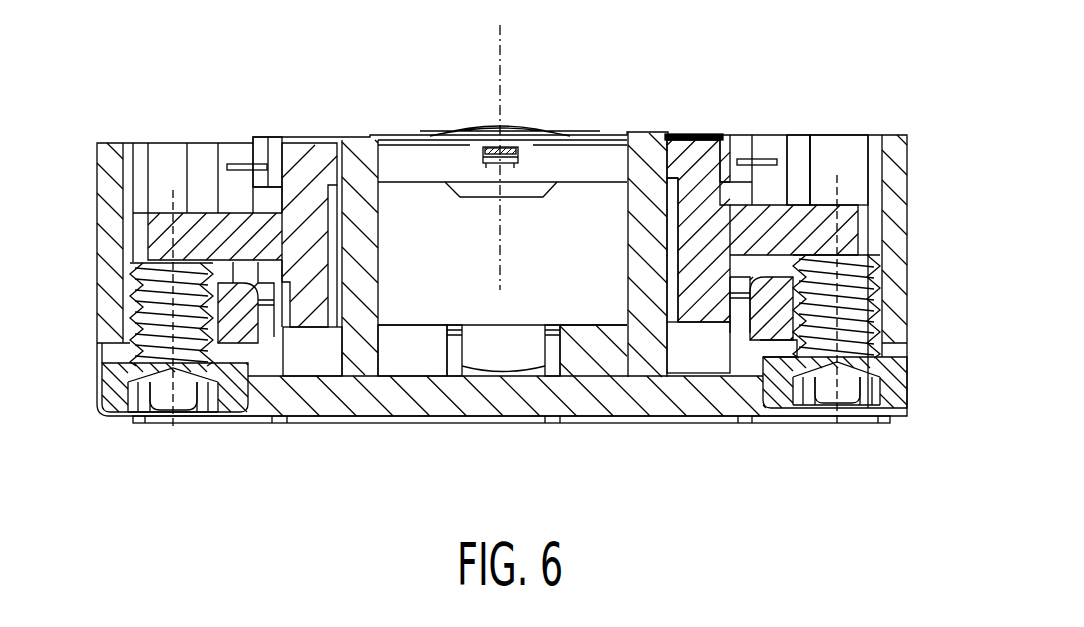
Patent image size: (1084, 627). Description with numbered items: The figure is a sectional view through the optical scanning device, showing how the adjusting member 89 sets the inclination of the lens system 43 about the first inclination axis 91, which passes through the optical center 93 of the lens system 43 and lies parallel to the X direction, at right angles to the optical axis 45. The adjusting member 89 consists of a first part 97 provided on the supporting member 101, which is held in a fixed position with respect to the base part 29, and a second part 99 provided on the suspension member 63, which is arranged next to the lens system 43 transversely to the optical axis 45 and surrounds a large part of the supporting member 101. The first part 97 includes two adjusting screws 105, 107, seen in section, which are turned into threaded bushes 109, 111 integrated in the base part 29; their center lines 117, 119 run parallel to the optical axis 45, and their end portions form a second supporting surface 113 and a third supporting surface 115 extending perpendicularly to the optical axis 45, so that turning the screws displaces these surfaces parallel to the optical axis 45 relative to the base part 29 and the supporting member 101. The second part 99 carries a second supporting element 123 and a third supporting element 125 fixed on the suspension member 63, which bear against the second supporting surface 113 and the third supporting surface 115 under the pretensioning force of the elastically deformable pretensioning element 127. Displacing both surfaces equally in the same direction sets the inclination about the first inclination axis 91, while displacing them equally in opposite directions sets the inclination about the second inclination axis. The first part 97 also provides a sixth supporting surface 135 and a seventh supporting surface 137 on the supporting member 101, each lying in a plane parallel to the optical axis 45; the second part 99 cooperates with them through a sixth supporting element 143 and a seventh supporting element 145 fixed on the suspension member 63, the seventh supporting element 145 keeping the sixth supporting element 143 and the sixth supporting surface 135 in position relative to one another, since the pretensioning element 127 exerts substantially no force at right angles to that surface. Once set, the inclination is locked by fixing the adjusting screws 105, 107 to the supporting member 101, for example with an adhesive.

The base part 29 is at (892, 170).
The lens system 43 is at (527, 190).
The optical axis 45 is at (502, 42).
The suspension member 63 is at (700, 203).
The adjusting member 89 is at (166, 458).
The first inclination axis 91 is at (375, 137).
The optical center 93 is at (500, 130).
The first part 97 is at (657, 115).
The second part 99 is at (710, 115).
The supporting member 101 is at (352, 140).
The adjusting screw 105 is at (888, 262).
The adjusting screw 107 is at (157, 285).
The threaded bush 109 is at (890, 290).
The threaded bush 111 is at (118, 314).
The second supporting surface 113 is at (833, 318).
The third supporting surface 115 is at (172, 262).
The center line 117 is at (850, 162).
The center line 119 is at (170, 190).
The second supporting element 123 is at (821, 235).
The third supporting element 125 is at (187, 143).
The pretensioning element 127 is at (494, 165).
The sixth supporting surface 135 is at (650, 190).
The seventh supporting surface 137 is at (372, 196).
The sixth supporting element 143 is at (668, 172).
The seventh supporting element 145 is at (316, 148).